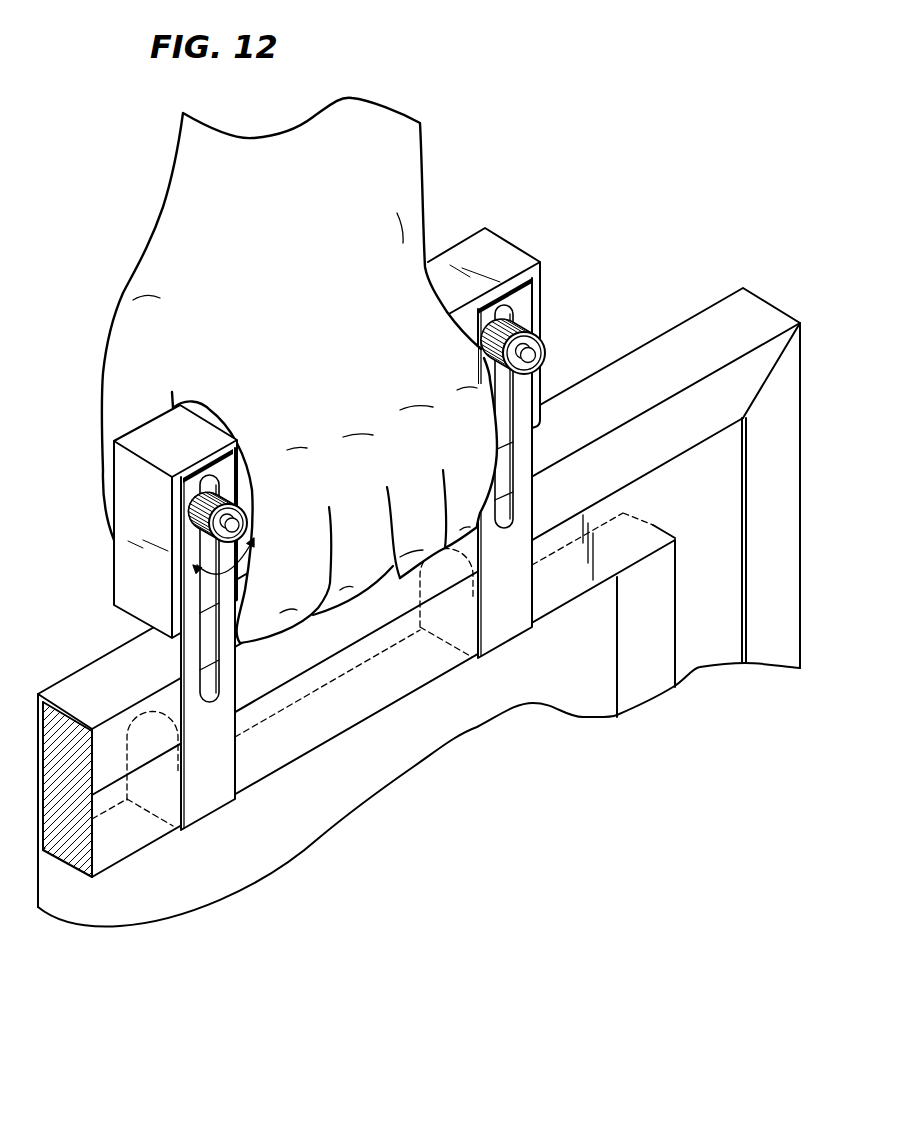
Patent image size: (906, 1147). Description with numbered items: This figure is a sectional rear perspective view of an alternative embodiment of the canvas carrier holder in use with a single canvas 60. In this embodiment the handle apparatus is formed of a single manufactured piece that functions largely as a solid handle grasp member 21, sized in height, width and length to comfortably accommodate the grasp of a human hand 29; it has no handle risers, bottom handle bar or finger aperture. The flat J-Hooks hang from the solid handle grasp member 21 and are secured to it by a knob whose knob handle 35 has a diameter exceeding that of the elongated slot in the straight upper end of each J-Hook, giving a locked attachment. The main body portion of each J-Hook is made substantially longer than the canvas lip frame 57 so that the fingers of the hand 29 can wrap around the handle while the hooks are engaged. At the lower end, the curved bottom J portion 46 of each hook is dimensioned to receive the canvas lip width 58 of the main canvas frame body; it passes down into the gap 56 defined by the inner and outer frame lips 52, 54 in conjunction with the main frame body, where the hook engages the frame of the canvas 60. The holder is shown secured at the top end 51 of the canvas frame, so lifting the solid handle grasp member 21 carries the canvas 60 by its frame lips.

The solid handle grasp member 21 is at (464, 322).
The human hand 29 is at (200, 217).
The knob handle 35 is at (222, 497).
The bottom J portion 46 is at (458, 627).
The top end 51 is at (672, 352).
The inner frame lip 52 is at (625, 535).
The outer frame lip 54 is at (700, 583).
The gap 56 is at (121, 762).
The canvas lip frame 57 is at (92, 837).
The canvas lip width 58 is at (652, 525).
The canvas 60 is at (37, 728).